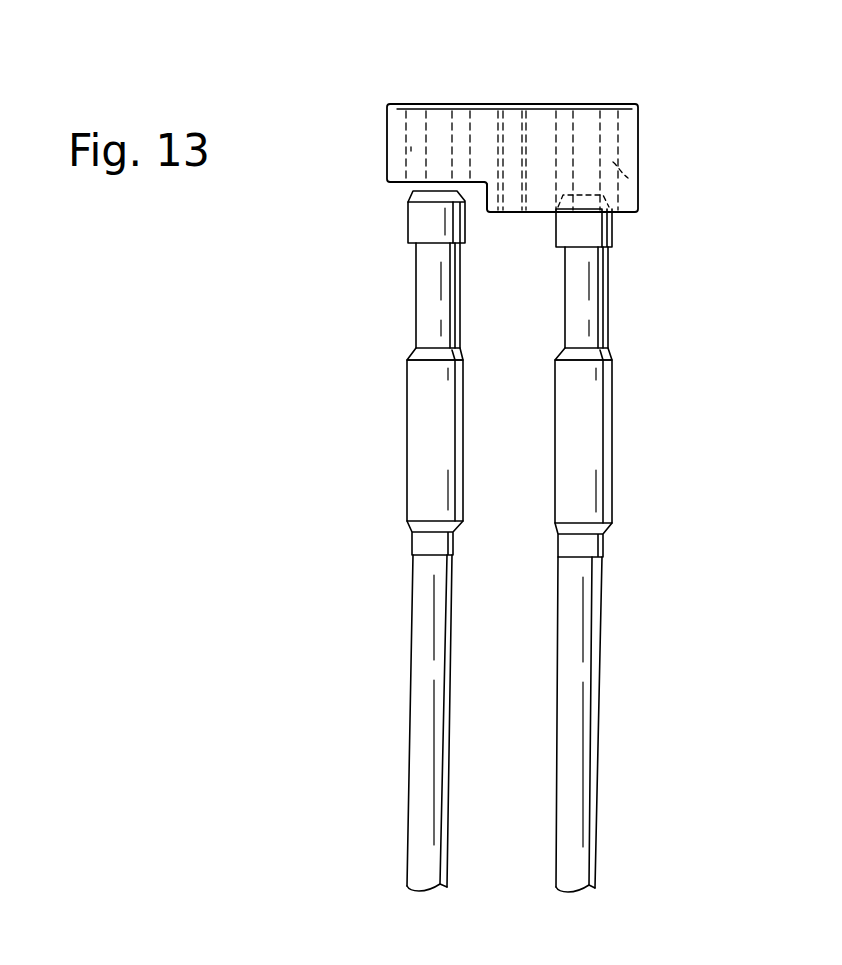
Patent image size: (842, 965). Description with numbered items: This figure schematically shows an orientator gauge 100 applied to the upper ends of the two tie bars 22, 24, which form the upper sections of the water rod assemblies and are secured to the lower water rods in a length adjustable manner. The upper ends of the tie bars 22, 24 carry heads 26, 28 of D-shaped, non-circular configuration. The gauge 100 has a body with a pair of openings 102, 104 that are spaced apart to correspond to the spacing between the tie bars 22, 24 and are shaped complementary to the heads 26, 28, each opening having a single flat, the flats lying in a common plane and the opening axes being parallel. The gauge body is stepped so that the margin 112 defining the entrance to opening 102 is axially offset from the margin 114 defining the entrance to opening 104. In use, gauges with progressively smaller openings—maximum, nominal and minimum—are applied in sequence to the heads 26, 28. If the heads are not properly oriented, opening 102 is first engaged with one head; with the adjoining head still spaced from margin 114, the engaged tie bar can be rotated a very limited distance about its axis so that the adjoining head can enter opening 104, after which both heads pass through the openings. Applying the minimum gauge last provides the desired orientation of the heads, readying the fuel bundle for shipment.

The orientator gauge 100 is at (638, 166).
The opening 102 is at (628, 178).
The opening 104 is at (411, 151).
The margin 112 is at (503, 213).
The margin 114 is at (393, 183).
The tie bar 22 is at (407, 373).
The tie bar 24 is at (612, 395).
The head 26 is at (420, 222).
The head 28 is at (599, 230).